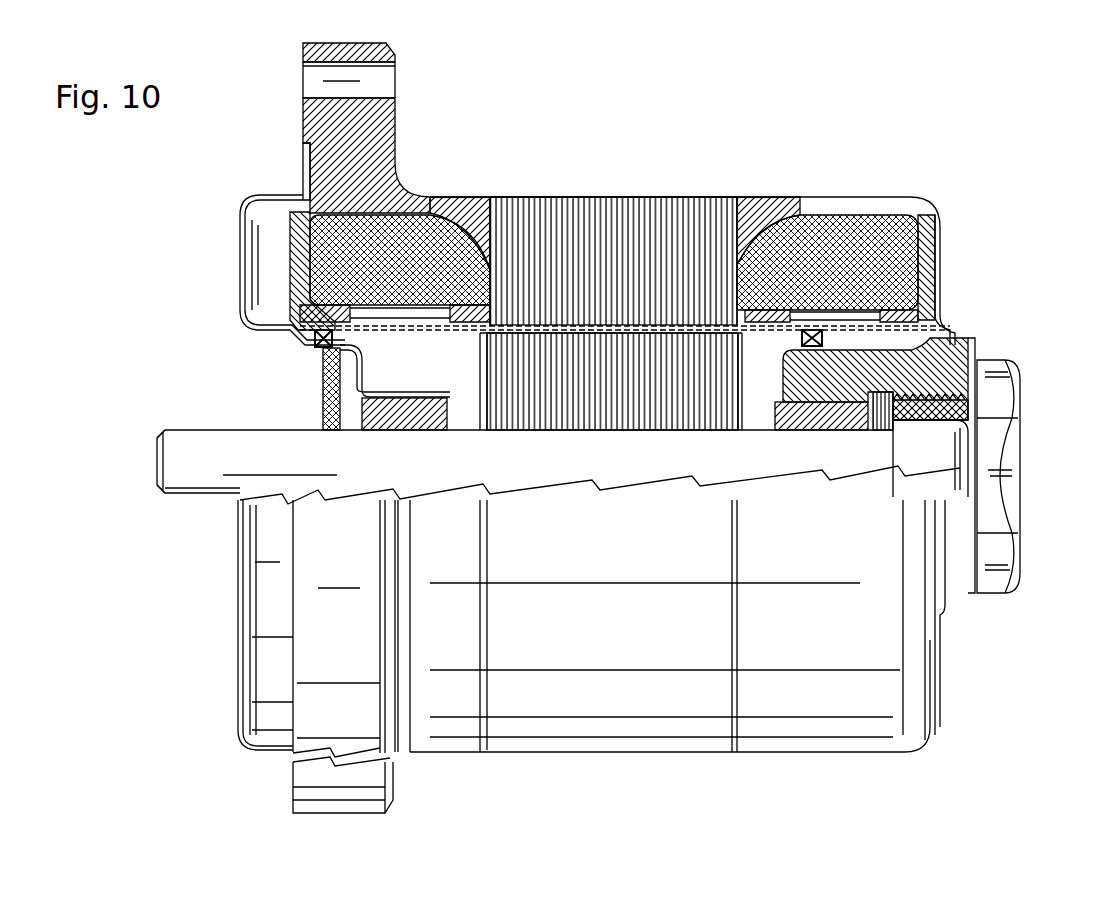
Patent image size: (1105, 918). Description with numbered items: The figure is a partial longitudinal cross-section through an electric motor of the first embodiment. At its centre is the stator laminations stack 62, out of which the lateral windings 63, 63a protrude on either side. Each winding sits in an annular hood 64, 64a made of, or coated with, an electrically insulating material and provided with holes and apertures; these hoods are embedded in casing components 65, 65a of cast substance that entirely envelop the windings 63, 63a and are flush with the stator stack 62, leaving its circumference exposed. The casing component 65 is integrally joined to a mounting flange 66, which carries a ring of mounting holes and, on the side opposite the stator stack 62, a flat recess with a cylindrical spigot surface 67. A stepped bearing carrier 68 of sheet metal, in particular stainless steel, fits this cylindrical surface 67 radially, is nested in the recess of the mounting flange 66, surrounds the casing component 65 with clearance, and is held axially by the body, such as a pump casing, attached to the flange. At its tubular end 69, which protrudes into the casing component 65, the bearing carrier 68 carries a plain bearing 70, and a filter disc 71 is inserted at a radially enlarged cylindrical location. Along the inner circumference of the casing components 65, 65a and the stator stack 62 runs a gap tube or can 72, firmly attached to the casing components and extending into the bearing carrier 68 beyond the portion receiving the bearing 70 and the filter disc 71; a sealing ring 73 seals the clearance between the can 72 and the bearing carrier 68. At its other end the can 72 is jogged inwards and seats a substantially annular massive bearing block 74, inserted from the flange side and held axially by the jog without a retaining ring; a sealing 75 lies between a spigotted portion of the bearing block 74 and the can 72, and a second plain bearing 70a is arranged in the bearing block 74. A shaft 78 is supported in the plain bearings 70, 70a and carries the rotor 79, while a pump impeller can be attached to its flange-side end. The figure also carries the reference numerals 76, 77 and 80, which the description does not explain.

The stator laminations stack 62 is at (555, 225).
The winding 63 is at (437, 227).
The winding 63a is at (845, 240).
The annular hood 64 is at (300, 252).
The annular hood 64a is at (895, 215).
The casing component 65 is at (468, 215).
The casing component 65a is at (765, 213).
The mounting flange 66 is at (318, 128).
The cylindrical spigot surface 67 is at (372, 97).
The bearing carrier 68 is at (240, 275).
The tubular end 69 is at (412, 395).
The plain bearing 70 is at (400, 432).
The plain bearing 70a is at (825, 432).
The filter disc 71 is at (330, 385).
The gap tube (can) 72 is at (442, 332).
The sealing ring 73 is at (318, 342).
The bearing block 74 is at (940, 352).
The sealing 75 is at (805, 342).
The motor unit 76 is at (953, 178).
The nut 77 is at (1002, 485).
The shaft 78 is at (185, 490).
The rotor 79 is at (680, 420).
The shim 80 is at (303, 148).